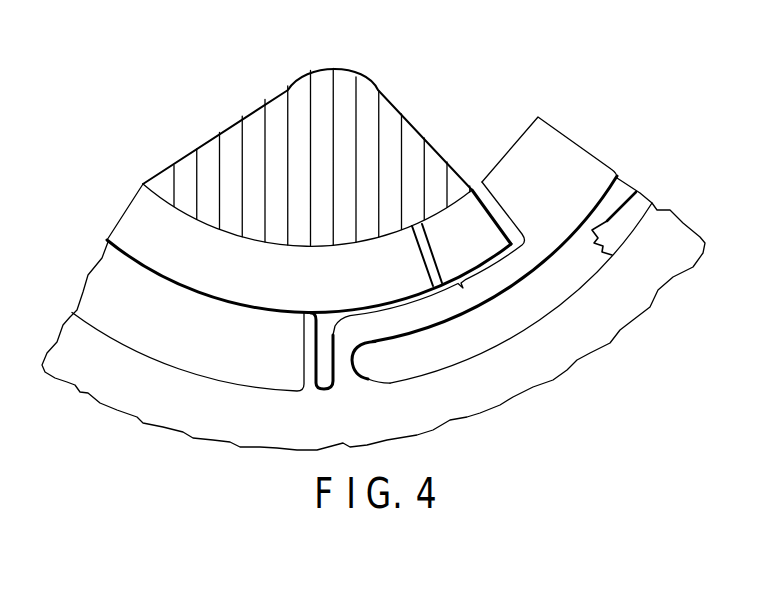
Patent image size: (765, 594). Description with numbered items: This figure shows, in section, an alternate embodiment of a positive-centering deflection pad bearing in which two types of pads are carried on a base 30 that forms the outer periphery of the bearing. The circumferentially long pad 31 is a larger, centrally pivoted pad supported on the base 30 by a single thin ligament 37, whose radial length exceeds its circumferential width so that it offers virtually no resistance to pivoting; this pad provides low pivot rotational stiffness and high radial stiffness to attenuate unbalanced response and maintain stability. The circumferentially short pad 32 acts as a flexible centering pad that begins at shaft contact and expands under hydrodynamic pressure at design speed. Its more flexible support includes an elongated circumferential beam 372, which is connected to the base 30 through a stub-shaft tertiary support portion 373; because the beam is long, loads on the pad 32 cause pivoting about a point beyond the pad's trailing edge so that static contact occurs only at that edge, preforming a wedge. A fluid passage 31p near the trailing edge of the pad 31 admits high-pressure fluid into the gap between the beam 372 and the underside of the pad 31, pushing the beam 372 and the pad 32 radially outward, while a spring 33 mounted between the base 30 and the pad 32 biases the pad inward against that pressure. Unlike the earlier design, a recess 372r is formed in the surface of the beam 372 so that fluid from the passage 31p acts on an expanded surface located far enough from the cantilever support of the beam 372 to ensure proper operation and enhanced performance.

The base 30 is at (188, 408).
The circumferentially long pad 31 is at (186, 253).
The fluid passage 31p is at (423, 254).
The circumferentially short pad 32 is at (559, 189).
The spring 33 is at (636, 192).
The ligament 37 is at (308, 348).
The circumferential beam 372 is at (436, 321).
The recess 372r is at (563, 303).
The tertiary support portion 373 is at (353, 358).